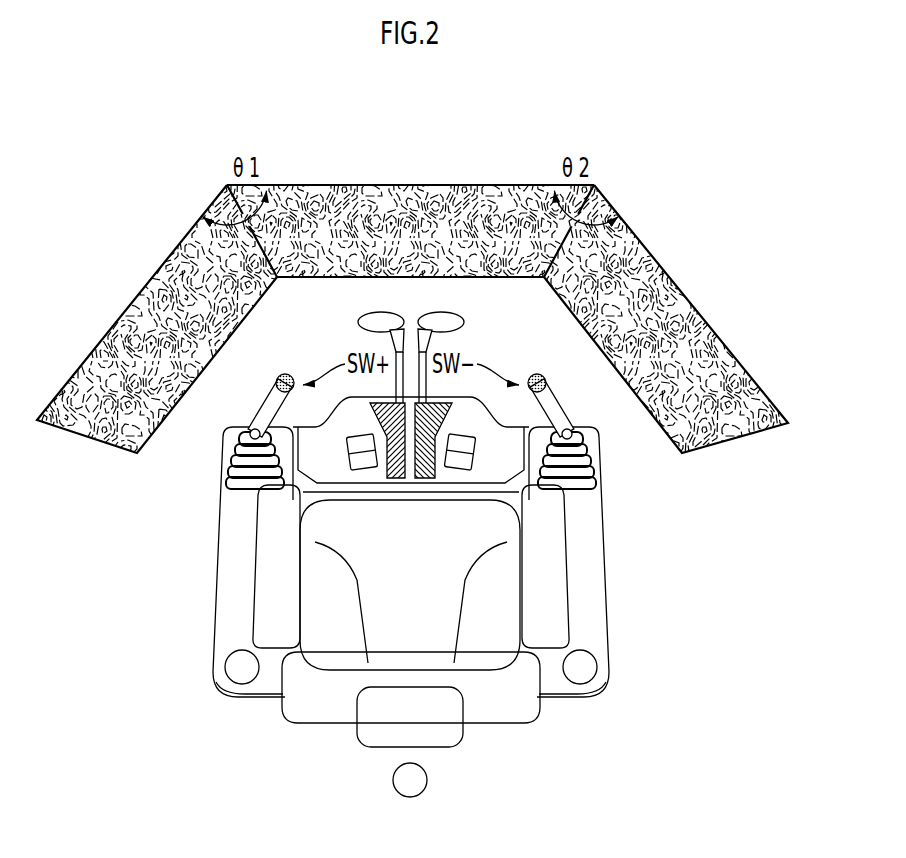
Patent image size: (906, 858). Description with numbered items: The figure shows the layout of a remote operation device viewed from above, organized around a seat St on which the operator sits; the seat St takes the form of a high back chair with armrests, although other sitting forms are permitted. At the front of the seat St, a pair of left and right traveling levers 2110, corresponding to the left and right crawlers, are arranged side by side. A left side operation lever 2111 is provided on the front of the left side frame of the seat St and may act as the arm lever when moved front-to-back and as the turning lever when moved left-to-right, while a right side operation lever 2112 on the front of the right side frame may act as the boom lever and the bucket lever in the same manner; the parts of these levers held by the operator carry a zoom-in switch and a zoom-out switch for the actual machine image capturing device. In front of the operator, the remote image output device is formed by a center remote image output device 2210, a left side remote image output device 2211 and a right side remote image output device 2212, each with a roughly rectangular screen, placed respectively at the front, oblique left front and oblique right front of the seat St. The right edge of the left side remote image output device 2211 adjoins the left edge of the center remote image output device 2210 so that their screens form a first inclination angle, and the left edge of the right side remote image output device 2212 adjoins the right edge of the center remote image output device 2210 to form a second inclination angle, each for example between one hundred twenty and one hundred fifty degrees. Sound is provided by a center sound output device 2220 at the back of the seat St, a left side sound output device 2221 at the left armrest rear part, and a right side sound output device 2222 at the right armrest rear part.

The center remote image output device 2210 is at (402, 170).
The left side remote image output device 2211 is at (133, 283).
The right side remote image output device 2212 is at (688, 283).
The traveling levers 2110 is at (442, 305).
The left side operation lever 2111 is at (273, 368).
The right side operation lever 2112 is at (547, 368).
The left side sound output device 2221 is at (220, 667).
The right side sound output device 2222 is at (602, 667).
The center sound output device 2220 is at (435, 782).
The seat St is at (484, 618).